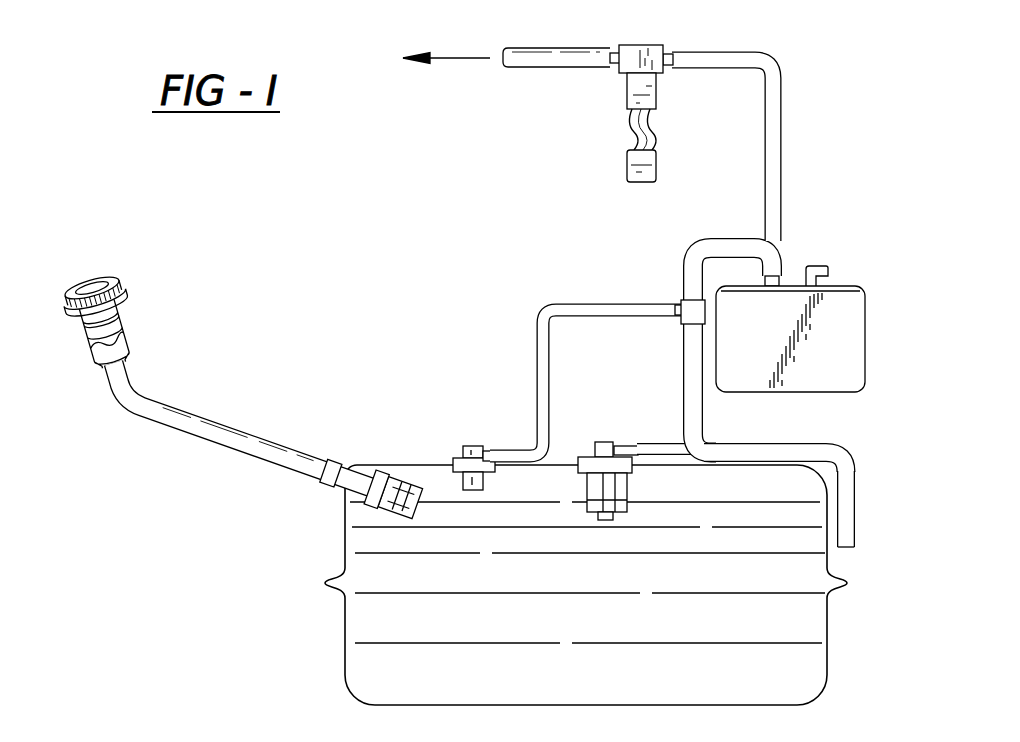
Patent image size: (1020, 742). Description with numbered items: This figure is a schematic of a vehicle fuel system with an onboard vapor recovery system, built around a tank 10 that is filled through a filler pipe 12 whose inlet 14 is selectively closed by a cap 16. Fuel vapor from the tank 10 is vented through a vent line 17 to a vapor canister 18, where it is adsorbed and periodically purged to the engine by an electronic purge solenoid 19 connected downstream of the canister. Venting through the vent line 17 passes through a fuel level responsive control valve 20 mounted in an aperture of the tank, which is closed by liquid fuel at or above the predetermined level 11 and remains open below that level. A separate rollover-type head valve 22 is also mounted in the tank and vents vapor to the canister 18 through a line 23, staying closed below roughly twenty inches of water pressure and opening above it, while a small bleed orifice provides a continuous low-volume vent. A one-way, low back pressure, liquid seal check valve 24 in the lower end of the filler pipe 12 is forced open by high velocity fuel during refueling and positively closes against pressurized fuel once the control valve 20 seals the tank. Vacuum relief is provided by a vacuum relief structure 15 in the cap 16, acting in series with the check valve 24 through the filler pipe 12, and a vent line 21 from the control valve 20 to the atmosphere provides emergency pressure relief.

The tank 10 is at (364, 465).
The predetermined level 11 is at (790, 500).
The filler pipe 12 is at (202, 420).
The inlet 14 is at (133, 327).
The vacuum relief structure 15 is at (88, 282).
The cap 16 is at (104, 272).
The vent line 17 is at (693, 407).
The vapor canister 18 is at (857, 308).
The electronic purge solenoid 19 is at (636, 52).
The fuel level responsive control valve 20 is at (586, 477).
The vent line 21 is at (858, 497).
The rollover-type head valve 22 is at (474, 451).
The line 23 is at (581, 309).
The liquid seal check valve 24 is at (380, 514).